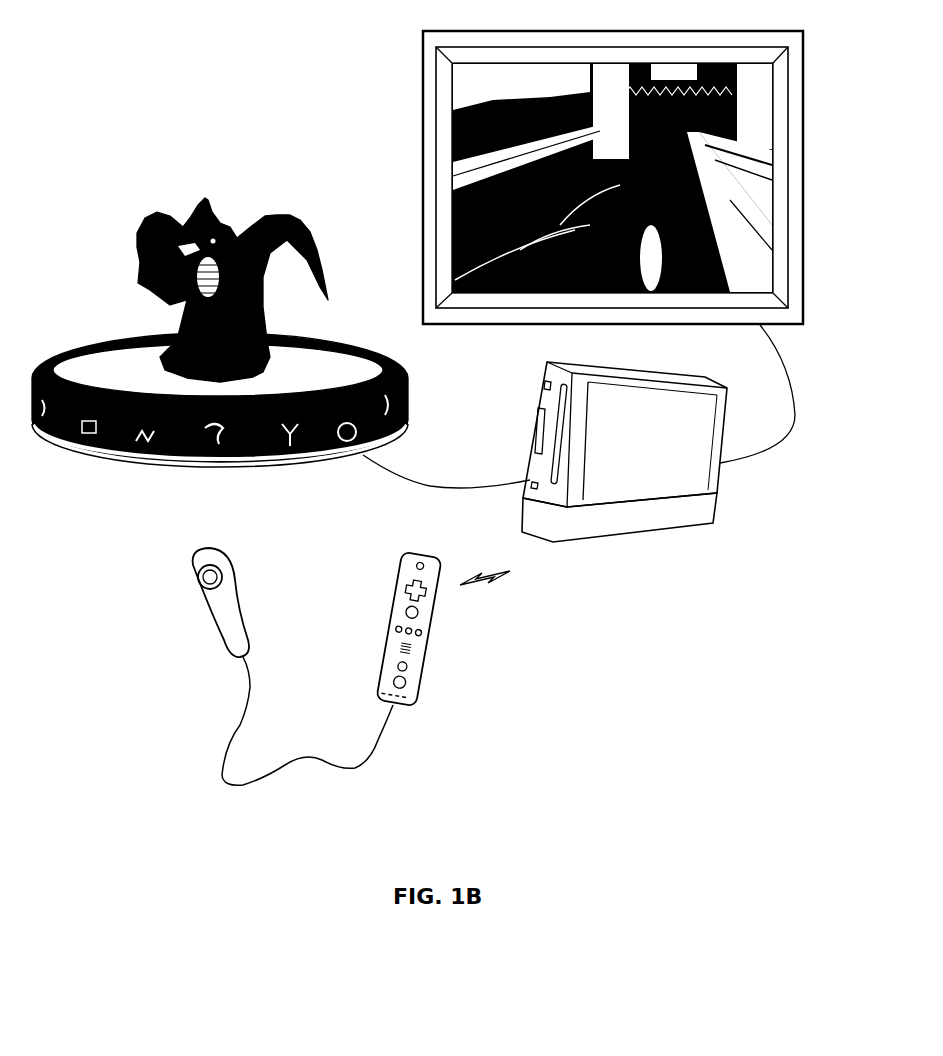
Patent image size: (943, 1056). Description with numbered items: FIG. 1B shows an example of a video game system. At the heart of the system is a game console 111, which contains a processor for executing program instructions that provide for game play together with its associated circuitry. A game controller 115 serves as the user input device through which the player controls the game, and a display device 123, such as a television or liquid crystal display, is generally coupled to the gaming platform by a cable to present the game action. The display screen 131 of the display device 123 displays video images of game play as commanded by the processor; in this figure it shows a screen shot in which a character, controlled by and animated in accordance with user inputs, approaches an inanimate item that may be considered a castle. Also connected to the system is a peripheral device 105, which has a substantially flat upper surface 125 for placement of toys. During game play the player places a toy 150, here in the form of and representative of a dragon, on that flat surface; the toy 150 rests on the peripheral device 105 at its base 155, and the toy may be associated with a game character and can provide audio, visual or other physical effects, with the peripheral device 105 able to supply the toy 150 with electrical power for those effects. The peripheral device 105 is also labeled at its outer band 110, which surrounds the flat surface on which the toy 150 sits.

The peripheral device 105 is at (220, 425).
The portal band 110 is at (224, 460).
The portal top surface 125 is at (104, 368).
The toy 150 is at (284, 264).
The figure base 155 is at (272, 372).
The display device 123 is at (649, 184).
The display screen 131 is at (770, 153).
The game console 111 is at (705, 525).
The game controller 115 is at (425, 618).